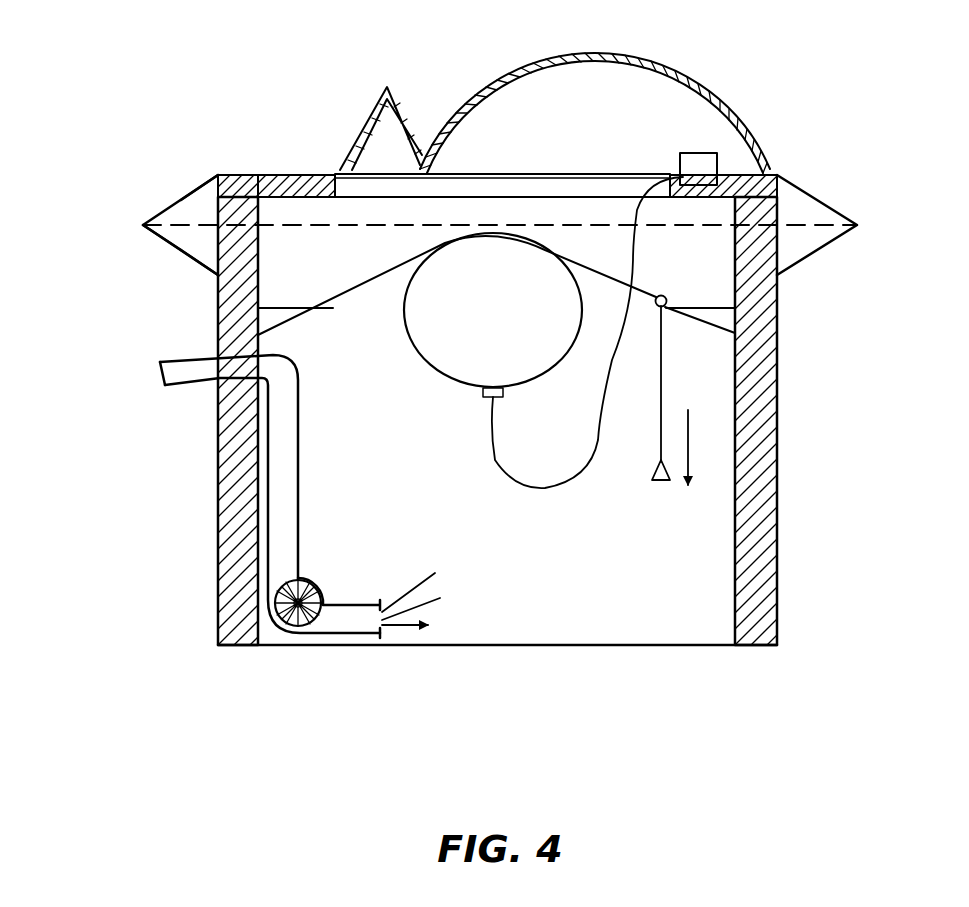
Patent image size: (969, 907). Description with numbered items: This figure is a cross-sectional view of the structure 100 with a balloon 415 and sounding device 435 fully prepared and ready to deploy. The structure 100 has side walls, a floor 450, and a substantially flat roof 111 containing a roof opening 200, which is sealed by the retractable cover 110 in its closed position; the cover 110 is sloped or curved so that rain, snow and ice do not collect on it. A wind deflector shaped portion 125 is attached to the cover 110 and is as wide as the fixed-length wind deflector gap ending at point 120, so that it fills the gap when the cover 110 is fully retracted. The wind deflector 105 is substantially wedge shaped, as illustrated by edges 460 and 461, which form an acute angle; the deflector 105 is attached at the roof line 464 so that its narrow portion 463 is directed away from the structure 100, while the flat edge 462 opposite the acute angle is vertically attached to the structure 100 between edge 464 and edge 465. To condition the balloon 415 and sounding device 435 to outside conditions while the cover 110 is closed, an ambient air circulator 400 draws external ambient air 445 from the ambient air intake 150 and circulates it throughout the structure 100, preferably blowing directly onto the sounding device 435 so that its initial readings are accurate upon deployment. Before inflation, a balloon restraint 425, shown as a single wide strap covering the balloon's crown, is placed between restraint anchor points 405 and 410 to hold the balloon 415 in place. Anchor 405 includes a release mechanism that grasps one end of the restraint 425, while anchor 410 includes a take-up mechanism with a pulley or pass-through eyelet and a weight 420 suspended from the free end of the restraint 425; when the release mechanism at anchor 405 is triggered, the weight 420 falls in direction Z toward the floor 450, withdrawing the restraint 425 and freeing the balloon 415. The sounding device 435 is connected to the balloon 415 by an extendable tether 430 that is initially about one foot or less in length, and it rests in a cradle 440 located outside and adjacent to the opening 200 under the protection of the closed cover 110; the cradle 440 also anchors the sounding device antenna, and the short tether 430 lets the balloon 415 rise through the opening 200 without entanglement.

The structure 100 is at (216, 503).
The wind deflector 105 is at (181, 170).
The retractable cover 110 is at (678, 82).
The roof 111 is at (288, 172).
The wind deflector gap point 120 is at (825, 205).
The wind deflector shaped portion 125 is at (395, 100).
The ambient air intake 150 is at (165, 383).
The roof opening 200 is at (552, 188).
The ambient air circulator 400 is at (281, 630).
The restraint anchor 405 is at (218, 317).
The restraint anchor 410 is at (667, 298).
The balloon 415 is at (430, 352).
The weight 420 is at (664, 483).
The balloon restraint 425 is at (333, 306).
The extendable tether 430 is at (497, 458).
The sounding device 435 is at (695, 158).
The cradle 440 is at (735, 186).
The external ambient air 445 is at (408, 630).
The floor 450 is at (643, 648).
The wind deflector edge 460 is at (165, 207).
The wind deflector edge 461 is at (163, 237).
The flat edge 462 is at (217, 201).
The narrow portion 463 is at (142, 225).
The roof line 464 is at (221, 174).
The edge 465 is at (216, 277).